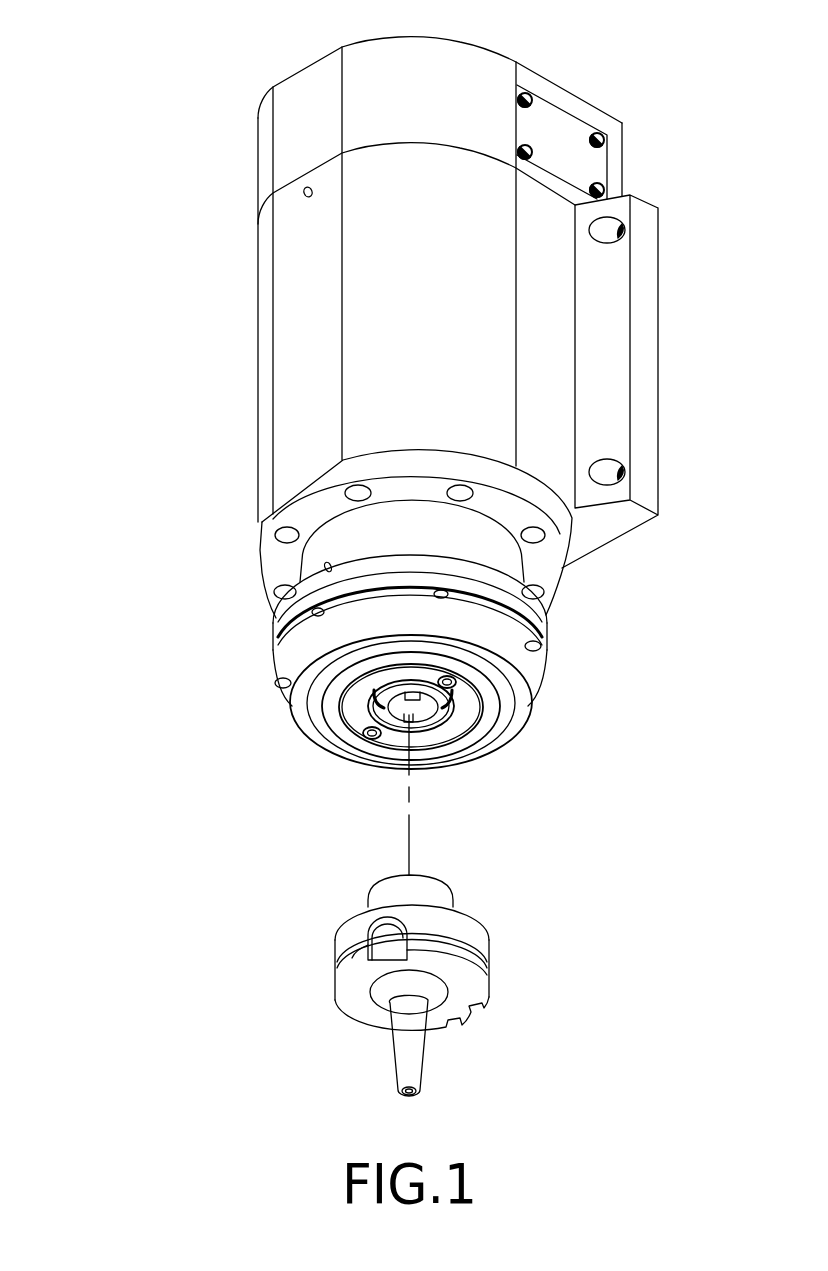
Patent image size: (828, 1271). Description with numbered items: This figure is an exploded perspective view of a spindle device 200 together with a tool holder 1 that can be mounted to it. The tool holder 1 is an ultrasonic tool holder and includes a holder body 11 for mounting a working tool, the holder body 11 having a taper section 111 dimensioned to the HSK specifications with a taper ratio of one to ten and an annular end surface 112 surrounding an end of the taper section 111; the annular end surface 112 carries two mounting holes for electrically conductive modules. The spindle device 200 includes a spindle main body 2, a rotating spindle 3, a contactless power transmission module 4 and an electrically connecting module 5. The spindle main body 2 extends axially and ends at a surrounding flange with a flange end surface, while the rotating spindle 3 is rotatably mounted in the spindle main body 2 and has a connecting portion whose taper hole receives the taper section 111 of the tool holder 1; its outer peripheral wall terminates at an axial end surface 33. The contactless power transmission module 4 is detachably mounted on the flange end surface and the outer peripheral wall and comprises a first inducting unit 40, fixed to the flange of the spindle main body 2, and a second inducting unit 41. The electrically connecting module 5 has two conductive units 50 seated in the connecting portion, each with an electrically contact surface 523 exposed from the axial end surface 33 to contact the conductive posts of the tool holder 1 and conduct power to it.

The spindle device 200 is at (238, 145).
The spindle main body 2 is at (312, 563).
The contactless power transmission module 4 is at (283, 711).
The first inducting unit 40 is at (533, 715).
The second inducting unit 41 is at (478, 747).
The electrically connecting module 5 is at (367, 737).
The rotating spindle 3 is at (342, 722).
The axial end surface 33 is at (357, 723).
The conductive unit 50 is at (460, 679).
The electrically contact surface 523 is at (452, 686).
The tool holder 1 is at (416, 969).
The taper section 111 is at (428, 892).
The annular end surface 112 is at (477, 926).
The holder body 11 is at (472, 942).